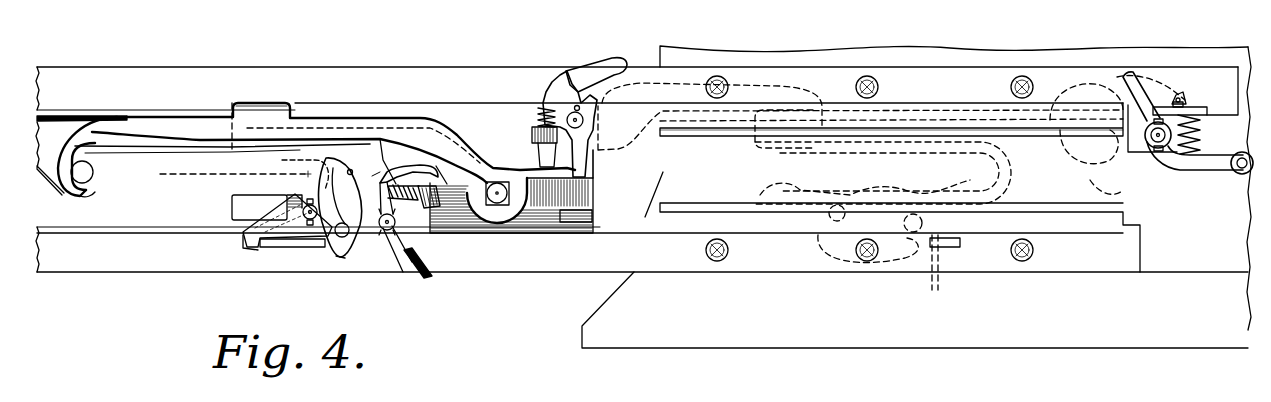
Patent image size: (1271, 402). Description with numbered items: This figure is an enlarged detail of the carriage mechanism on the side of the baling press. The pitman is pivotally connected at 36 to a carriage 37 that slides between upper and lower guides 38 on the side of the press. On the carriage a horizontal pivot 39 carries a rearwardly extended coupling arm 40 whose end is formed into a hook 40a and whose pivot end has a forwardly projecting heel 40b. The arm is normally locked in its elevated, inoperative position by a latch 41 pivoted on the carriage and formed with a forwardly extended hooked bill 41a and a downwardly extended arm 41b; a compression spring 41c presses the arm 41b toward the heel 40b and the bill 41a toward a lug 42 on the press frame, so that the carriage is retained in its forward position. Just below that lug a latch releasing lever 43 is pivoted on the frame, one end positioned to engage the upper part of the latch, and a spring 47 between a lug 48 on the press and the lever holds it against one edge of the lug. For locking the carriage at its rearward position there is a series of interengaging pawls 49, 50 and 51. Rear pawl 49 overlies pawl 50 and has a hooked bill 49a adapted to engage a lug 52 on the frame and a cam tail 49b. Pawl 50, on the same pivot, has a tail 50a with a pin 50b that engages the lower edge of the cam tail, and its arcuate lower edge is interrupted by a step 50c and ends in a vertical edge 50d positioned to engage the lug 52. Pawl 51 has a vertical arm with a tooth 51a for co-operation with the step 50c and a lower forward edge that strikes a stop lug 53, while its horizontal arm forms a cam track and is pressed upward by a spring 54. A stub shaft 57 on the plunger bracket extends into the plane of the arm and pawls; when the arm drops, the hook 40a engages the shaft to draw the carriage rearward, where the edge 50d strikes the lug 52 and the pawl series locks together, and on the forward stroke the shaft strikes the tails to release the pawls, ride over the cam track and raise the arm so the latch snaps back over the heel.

The pivotal connection 36 is at (578, 223).
The carriage 37 is at (480, 235).
The guides 38 is at (648, 120).
The horizontal pivot 39 is at (500, 206).
The coupling arm 40 is at (385, 94).
The hook 40a is at (150, 215).
The heel 40b is at (645, 195).
The latch 41 is at (567, 95).
The hooked bill 41a is at (565, 58).
The latch arm 41b is at (650, 170).
The compression spring 41c is at (452, 94).
The lug 42 is at (1153, 101).
The latch releasing lever 43 is at (1180, 168).
The spring 47 is at (1200, 125).
The lug 48 is at (1231, 96).
The rear pawl 49 is at (290, 240).
The hooked bill 49a is at (190, 306).
The cam tail 49b is at (220, 215).
The pawl 50 is at (356, 244).
The tail 50a is at (244, 169).
The pin 50b is at (285, 91).
The step 50c is at (372, 176).
The vertical edge 50d is at (322, 247).
The pawl 51 is at (397, 232).
The tooth 51a is at (410, 216).
The lug 52 is at (294, 248).
The stop lug 53 is at (957, 248).
The spring 54 is at (435, 224).
The stub shaft 57 is at (94, 172).